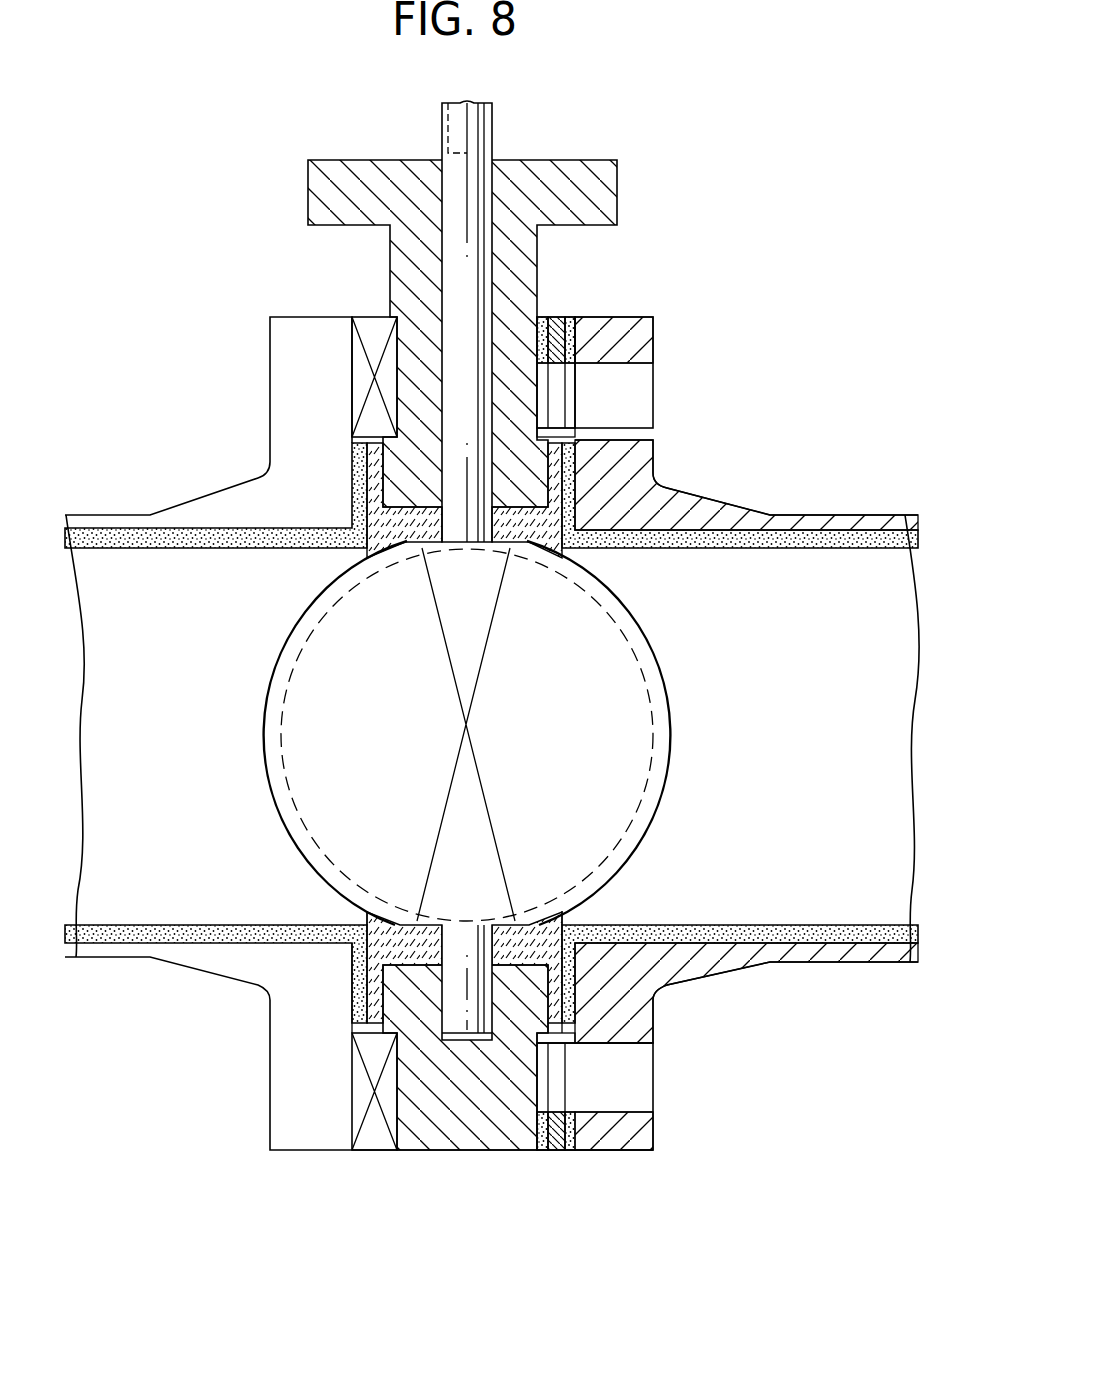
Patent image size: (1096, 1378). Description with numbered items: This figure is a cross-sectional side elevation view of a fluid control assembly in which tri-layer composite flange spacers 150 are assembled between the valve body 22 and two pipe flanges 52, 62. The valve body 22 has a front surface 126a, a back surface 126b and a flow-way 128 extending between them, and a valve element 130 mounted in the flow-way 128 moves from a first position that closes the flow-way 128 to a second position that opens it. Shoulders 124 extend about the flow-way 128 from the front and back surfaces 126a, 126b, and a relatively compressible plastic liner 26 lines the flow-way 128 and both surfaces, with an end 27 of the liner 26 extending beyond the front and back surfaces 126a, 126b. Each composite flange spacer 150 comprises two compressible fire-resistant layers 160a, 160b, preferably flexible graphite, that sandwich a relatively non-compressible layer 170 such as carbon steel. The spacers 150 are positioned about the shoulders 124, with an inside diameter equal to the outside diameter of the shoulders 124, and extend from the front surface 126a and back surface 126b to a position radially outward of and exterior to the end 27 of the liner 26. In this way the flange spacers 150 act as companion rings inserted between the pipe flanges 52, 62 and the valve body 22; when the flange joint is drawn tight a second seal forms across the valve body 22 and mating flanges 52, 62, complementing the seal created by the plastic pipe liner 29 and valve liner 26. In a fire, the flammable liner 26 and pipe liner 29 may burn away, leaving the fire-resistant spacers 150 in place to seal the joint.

The valve body 22 is at (450, 1115).
The liner 26 is at (575, 926).
The end of the liner 27 is at (570, 991).
The pipe liner 29 is at (570, 1012).
The pipe flange 52 is at (305, 1130).
The pipe flange 62 is at (655, 1137).
The shoulder 124 is at (393, 430).
The front surface 126a is at (385, 466).
The back surface 126b is at (567, 470).
The flow-way 128 is at (829, 704).
The valve element 130 is at (648, 631).
The tri-layer composite flange spacer 150 is at (360, 317).
The compressible fire resistant layer 160a is at (540, 338).
The compressible fire resistant layer 160b is at (596, 340).
The non-compressible layer 170 is at (567, 385).